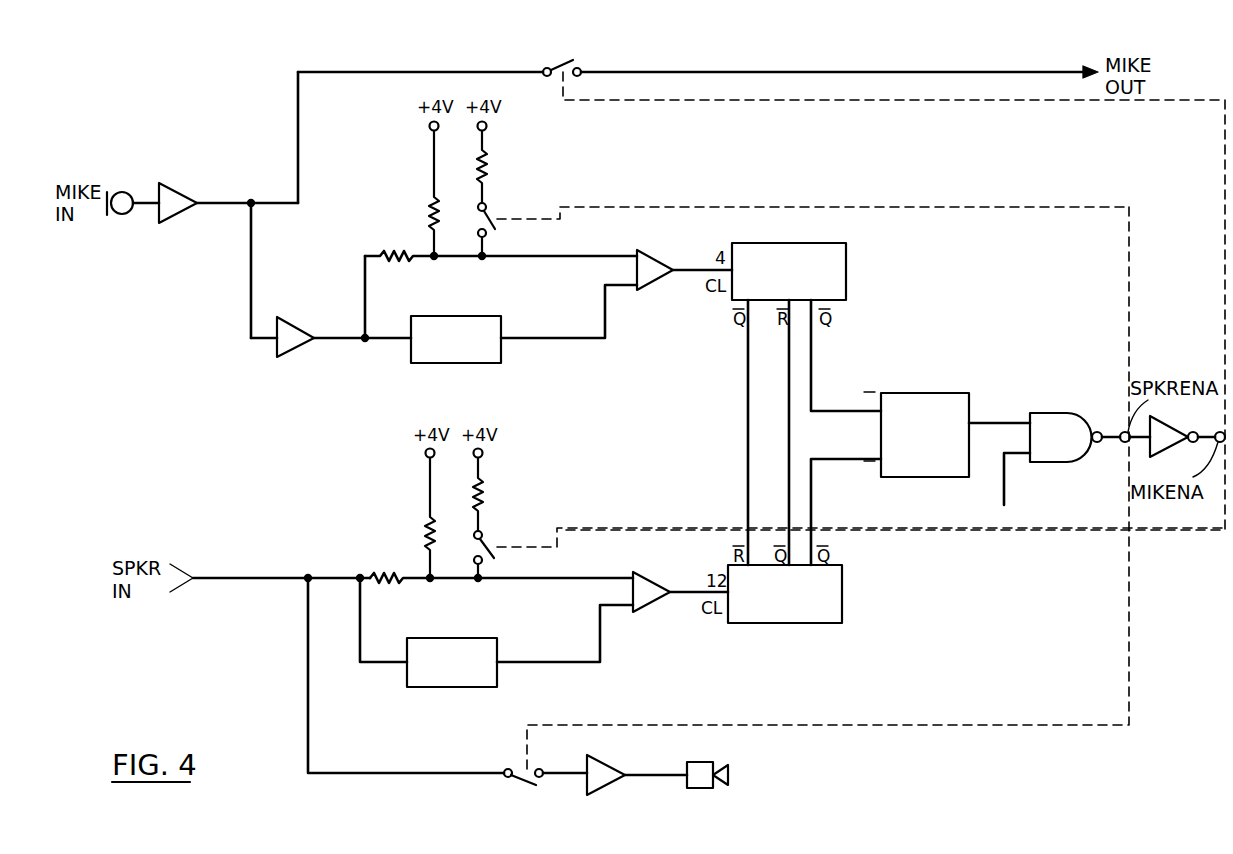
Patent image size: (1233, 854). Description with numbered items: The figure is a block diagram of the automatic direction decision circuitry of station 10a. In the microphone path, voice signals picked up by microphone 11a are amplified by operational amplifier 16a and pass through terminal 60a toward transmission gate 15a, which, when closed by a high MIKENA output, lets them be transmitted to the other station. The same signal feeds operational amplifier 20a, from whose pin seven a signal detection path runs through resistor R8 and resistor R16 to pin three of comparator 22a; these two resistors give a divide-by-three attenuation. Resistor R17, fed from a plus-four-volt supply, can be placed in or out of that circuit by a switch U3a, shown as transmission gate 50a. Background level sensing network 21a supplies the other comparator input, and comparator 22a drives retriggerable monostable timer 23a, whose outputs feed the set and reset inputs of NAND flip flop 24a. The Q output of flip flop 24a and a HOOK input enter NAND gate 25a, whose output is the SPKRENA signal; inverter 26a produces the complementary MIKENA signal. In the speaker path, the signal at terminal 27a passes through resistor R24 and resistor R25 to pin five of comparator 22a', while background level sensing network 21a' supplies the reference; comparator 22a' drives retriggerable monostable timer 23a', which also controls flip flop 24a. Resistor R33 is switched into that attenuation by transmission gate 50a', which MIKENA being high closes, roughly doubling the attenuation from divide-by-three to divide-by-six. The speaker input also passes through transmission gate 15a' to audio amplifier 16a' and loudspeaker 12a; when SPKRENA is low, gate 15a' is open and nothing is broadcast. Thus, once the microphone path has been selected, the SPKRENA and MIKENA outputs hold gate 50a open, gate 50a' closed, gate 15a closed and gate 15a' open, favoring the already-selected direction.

The station 10a is at (398, 412).
The microphone 11a is at (121, 191).
The amplifier 16a is at (185, 181).
The terminal 60a is at (248, 207).
The transmission gate 15a is at (544, 59).
The transmission gate 50a is at (803, 227).
The switch U3a is at (518, 240).
The resistor R8 is at (501, 268).
The resistor R16 is at (415, 192).
The resistor R17 is at (501, 167).
The resistor R24 is at (501, 591).
The resistor R25 is at (411, 516).
The resistor R33 is at (498, 494).
The amplifier 20a is at (296, 322).
The background level sensing network 21a is at (458, 320).
The comparator 22a is at (657, 261).
The retriggerable monostable timer 23a is at (818, 271).
The NAND flip flop 24a is at (904, 393).
The NAND gate 25a is at (1046, 412).
The inverter 26a is at (1164, 428).
The terminal 27a is at (359, 575).
The transmission gate 50a' is at (849, 544).
The background level sensing network 21a' is at (452, 643).
The comparator 22a' is at (658, 607).
The retriggerable monostable timer 23a' is at (819, 594).
The transmission gate 15a' is at (499, 788).
The audio amplifier 16a' is at (623, 761).
The loudspeaker 12a is at (703, 762).